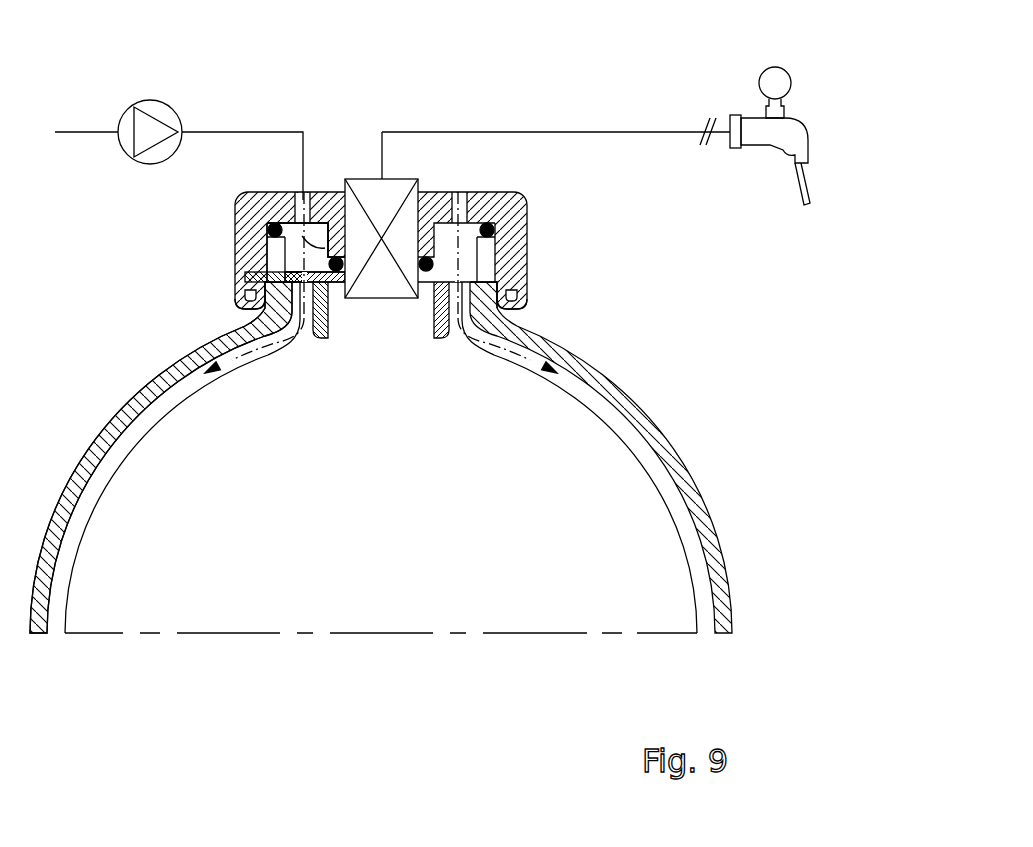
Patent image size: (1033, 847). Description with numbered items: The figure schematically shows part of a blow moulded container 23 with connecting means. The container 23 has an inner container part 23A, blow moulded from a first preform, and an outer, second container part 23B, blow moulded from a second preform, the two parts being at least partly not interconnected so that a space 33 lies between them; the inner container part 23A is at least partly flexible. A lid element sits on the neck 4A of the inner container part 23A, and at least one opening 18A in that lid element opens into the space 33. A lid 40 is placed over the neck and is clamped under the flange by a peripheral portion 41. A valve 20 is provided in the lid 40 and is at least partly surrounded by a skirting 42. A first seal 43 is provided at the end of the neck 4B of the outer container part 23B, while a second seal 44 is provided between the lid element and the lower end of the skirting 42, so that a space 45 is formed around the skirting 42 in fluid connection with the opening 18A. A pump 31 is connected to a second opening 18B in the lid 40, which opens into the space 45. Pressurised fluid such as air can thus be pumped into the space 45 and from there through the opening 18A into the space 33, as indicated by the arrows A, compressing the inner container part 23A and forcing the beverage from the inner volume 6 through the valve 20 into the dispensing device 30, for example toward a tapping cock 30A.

The pump 31 is at (150, 100).
The second opening 18B is at (303, 205).
The valve 20 is at (369, 188).
The dispensing device 30 is at (594, 104).
The tapping cock 30A is at (815, 104).
The lid 40 is at (533, 194).
The first seal 43 is at (495, 231).
The skirting 42 is at (487, 260).
The neck of the outer container part 4B is at (500, 279).
The peripheral portion 41 is at (528, 292).
The space around the skirting 45 is at (292, 245).
The arrows A is at (283, 252).
The space between inner and outer container parts 33 is at (145, 420).
The opening 18A is at (302, 300).
The second seal 44 is at (333, 283).
The neck of the inner container part 4A is at (440, 310).
The inner volume 6 is at (369, 486).
The container 23 is at (682, 445).
The inner container part 23A is at (695, 498).
The outer container part 23B is at (693, 555).